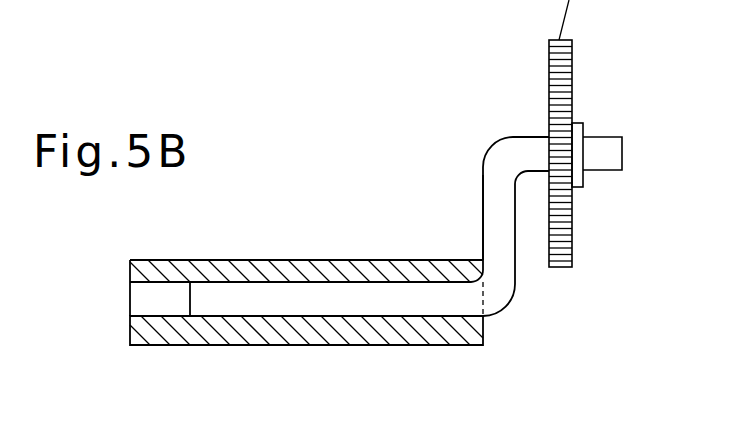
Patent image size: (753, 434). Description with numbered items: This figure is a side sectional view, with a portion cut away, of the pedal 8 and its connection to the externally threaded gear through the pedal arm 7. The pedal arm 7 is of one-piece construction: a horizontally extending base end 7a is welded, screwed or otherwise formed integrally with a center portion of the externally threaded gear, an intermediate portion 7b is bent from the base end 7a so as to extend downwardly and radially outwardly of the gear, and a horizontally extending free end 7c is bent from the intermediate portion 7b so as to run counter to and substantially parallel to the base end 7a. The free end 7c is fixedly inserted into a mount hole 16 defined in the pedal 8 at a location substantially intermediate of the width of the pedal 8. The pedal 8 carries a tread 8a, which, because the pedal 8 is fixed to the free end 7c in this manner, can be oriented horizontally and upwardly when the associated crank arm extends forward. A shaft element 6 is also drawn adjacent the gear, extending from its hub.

The shaft 6 is at (612, 137).
The pedal arm 7 is at (482, 157).
The base end 7a is at (522, 137).
The intermediate portion 7b is at (483, 206).
The free end 7c is at (390, 303).
The pedal 8 is at (279, 256).
The tread 8a is at (200, 260).
The mount hole 16 is at (256, 316).